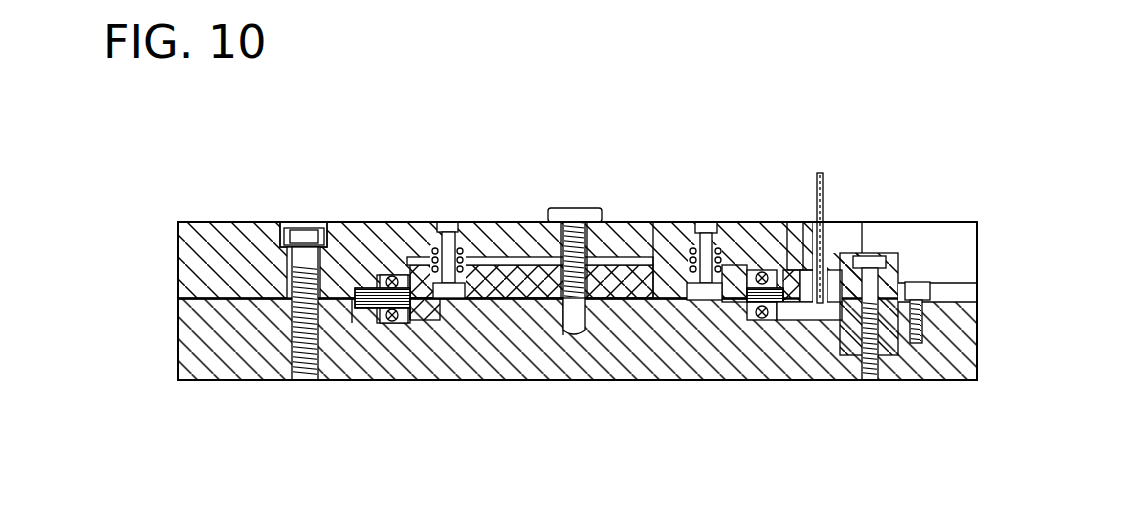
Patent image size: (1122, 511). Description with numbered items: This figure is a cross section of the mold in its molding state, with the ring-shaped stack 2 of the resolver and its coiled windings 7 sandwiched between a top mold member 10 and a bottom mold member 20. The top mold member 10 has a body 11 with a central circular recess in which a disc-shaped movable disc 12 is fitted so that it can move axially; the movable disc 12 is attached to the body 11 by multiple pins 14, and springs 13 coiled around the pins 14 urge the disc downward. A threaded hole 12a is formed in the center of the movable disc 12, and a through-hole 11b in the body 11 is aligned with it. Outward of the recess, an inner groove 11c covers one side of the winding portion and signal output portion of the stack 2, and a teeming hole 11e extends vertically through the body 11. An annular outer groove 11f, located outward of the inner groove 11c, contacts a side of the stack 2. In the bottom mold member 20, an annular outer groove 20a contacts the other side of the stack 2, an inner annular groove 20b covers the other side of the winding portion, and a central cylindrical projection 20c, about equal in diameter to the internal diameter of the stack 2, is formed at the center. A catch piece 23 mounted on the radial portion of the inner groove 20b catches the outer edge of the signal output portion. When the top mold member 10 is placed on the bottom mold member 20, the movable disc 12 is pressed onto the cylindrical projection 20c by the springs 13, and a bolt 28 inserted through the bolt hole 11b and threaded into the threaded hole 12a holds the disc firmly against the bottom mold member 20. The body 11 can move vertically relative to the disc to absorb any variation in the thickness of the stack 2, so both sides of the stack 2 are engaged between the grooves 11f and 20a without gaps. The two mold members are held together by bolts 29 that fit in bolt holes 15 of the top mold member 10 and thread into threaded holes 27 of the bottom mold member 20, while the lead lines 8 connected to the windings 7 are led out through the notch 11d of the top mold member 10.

The top mold member 10 is at (921, 175).
The body 11 is at (220, 228).
The through-hole 11b is at (588, 226).
The inner groove 11c is at (388, 272).
The notch 11d is at (847, 222).
The teeming hole 11e is at (795, 224).
The annular outer groove 11f is at (365, 285).
The movable disc 12 is at (627, 298).
The threaded hole 12a is at (563, 330).
The springs 13 is at (420, 250).
The pins 14 is at (443, 222).
The bolt holes 15 is at (287, 224).
The stack 2 is at (385, 318).
The windings 7 is at (404, 322).
The lead lines 8 is at (837, 234).
The bottom mold member 20 is at (807, 388).
The annular outer groove 20a is at (373, 310).
The inner annular groove 20b is at (388, 323).
The cylindrical projection 20c is at (652, 240).
The catch piece 23 is at (900, 263).
The threaded holes 27 is at (290, 355).
The bolt 28 is at (572, 205).
The bolts 29 is at (303, 232).